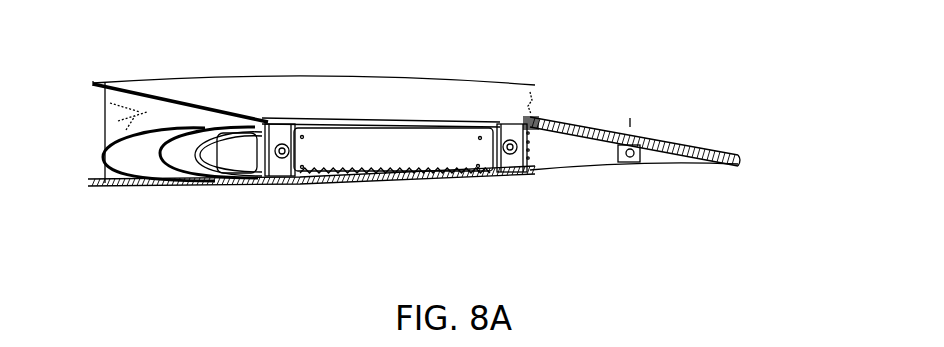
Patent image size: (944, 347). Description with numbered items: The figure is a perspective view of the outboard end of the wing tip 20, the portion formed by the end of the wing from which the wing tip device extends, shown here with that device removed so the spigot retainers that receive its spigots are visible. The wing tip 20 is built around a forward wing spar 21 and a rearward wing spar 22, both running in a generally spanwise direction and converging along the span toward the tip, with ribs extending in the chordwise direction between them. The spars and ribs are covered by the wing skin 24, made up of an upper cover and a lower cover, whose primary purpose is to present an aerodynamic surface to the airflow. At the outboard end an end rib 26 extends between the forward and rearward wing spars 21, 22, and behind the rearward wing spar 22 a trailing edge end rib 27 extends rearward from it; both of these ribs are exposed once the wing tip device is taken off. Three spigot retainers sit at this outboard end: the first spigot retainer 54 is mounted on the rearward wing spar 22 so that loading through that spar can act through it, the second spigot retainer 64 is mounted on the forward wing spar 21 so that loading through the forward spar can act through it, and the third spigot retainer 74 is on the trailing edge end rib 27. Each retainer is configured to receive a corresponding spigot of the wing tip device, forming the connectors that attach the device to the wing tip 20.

The wing tip 20 is at (738, 68).
The forward wing spar 21 is at (278, 126).
The rearward wing spar 22 is at (507, 126).
The wing skin 24 is at (232, 96).
The end rib 26 is at (375, 155).
The trailing edge end rib 27 is at (565, 150).
The first spigot retainer 54 is at (497, 171).
The second spigot retainer 64 is at (262, 186).
The third spigot retainer 74 is at (637, 143).